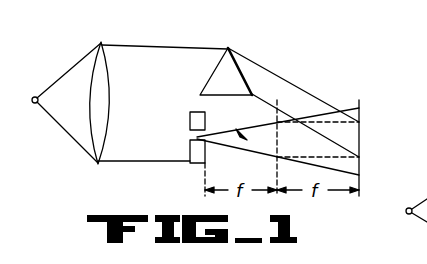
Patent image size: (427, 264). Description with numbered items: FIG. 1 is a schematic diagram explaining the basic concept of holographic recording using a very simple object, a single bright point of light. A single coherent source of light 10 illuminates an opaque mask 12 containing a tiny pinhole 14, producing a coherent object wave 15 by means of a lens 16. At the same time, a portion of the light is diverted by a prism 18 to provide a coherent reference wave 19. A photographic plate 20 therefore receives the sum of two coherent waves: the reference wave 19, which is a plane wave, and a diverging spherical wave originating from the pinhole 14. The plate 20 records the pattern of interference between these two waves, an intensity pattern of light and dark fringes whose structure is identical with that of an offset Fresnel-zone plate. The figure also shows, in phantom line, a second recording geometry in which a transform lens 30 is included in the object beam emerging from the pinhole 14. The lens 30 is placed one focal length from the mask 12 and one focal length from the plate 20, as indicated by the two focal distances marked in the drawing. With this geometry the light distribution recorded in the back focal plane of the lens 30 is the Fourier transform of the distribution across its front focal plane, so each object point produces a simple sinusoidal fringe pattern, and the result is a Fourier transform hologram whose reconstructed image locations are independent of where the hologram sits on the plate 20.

The coherent source of light 10 is at (33, 97).
The opaque mask 12 is at (192, 163).
The pinhole 14 is at (190, 137).
The object wave 15 is at (237, 133).
The lens 16 is at (104, 44).
The prism 18 is at (215, 70).
The reference wave 19 is at (308, 93).
The photographic plate 20 is at (361, 108).
The transform lens 30 is at (275, 110).